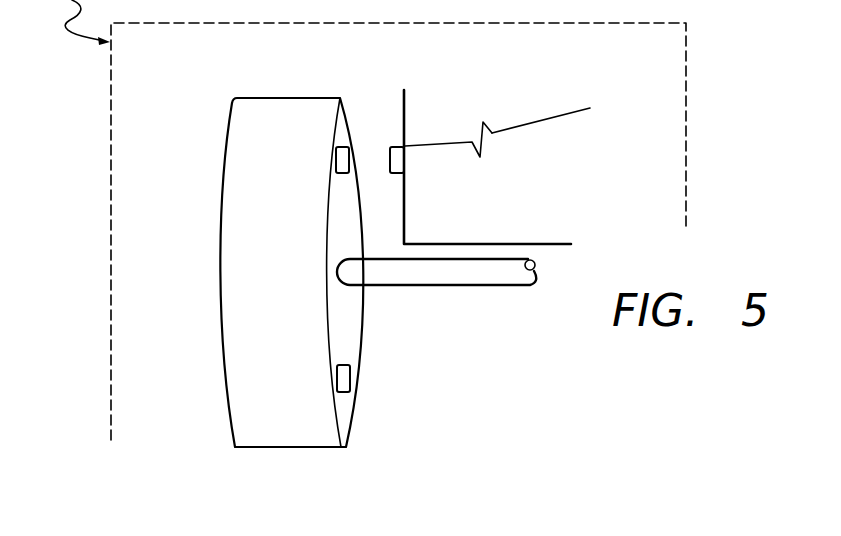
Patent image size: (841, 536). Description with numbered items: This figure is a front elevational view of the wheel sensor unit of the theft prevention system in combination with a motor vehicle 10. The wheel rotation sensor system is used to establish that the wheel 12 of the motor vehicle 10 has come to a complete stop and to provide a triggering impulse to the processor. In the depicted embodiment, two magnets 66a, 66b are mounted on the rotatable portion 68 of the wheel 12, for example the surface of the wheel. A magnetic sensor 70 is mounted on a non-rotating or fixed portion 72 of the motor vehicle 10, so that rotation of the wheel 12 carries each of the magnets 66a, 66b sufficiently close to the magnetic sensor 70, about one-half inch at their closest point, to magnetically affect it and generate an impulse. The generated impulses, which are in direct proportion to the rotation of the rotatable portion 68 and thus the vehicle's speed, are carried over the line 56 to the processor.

The motor vehicle 10 is at (398, 98).
The wheel 12 is at (219, 232).
The line 56 is at (547, 122).
The magnet 66a is at (335, 157).
The magnet 66b is at (335, 382).
The rotatable portion 68 is at (342, 207).
The magnetic sensor 70 is at (405, 155).
The fixed portion 72 is at (405, 144).